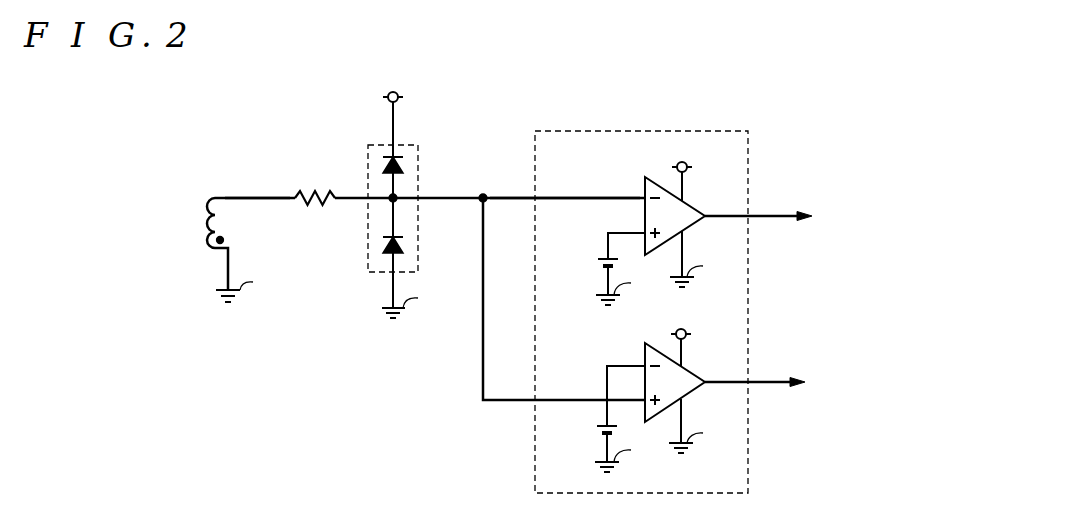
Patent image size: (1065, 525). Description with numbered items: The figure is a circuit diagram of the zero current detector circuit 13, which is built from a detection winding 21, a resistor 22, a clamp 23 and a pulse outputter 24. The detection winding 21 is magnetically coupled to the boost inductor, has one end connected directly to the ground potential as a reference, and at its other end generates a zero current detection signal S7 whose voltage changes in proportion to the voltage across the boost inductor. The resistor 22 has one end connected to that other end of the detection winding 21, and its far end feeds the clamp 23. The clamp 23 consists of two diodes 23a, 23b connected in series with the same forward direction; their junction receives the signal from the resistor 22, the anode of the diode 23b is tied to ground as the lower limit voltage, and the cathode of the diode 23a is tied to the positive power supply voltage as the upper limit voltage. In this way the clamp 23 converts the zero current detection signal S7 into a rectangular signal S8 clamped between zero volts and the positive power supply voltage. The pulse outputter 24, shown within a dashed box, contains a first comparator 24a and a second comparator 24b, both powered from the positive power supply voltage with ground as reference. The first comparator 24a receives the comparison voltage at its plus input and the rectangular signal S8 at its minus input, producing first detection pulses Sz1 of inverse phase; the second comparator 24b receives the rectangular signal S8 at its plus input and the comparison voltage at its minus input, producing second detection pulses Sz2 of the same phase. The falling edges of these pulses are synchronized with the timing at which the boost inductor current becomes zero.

The zero current detector circuit 13 is at (511, 83).
The detection winding 21 is at (213, 195).
The resistor 22 is at (311, 187).
The clamp 23 is at (421, 201).
The diode 23a is at (405, 168).
The diode 23b is at (405, 248).
The pulse outputter 24 is at (683, 131).
The first comparator 24a is at (645, 187).
The second comparator 24b is at (645, 357).
The zero current detection signal S7 is at (258, 187).
The rectangular signal S8 is at (505, 189).
The first detection pulses Sz1 is at (758, 201).
The second detection pulses Sz2 is at (755, 368).